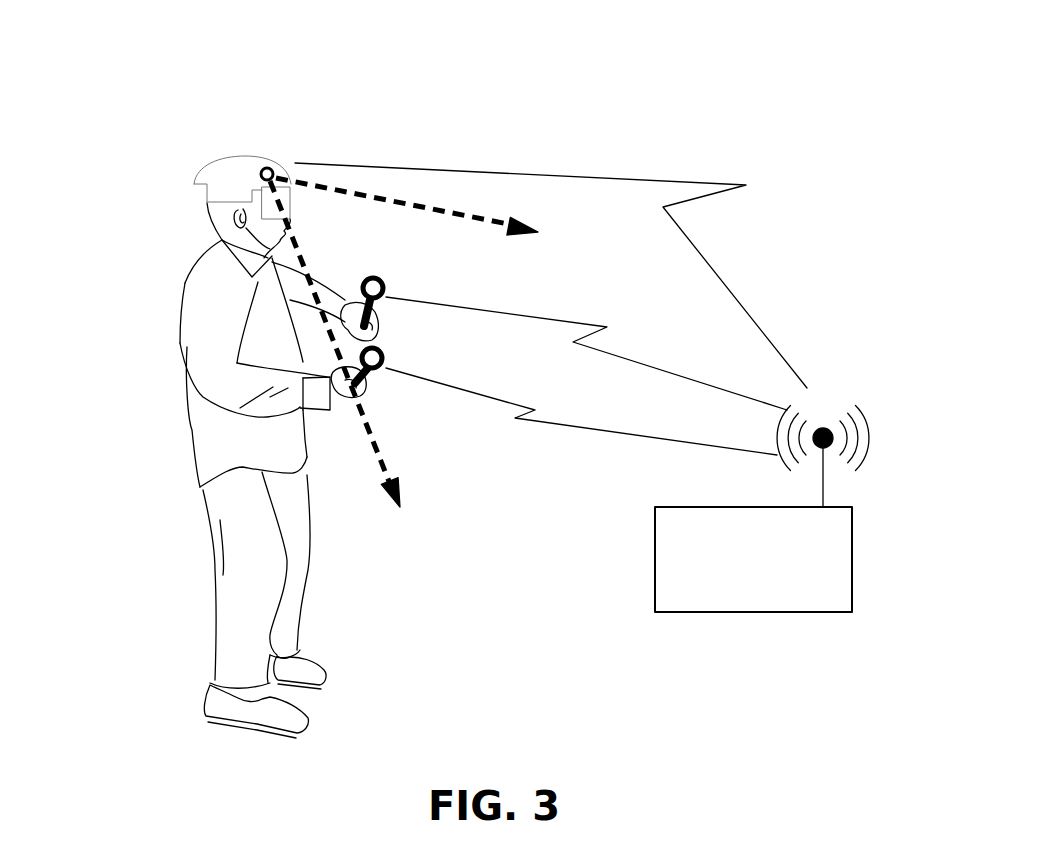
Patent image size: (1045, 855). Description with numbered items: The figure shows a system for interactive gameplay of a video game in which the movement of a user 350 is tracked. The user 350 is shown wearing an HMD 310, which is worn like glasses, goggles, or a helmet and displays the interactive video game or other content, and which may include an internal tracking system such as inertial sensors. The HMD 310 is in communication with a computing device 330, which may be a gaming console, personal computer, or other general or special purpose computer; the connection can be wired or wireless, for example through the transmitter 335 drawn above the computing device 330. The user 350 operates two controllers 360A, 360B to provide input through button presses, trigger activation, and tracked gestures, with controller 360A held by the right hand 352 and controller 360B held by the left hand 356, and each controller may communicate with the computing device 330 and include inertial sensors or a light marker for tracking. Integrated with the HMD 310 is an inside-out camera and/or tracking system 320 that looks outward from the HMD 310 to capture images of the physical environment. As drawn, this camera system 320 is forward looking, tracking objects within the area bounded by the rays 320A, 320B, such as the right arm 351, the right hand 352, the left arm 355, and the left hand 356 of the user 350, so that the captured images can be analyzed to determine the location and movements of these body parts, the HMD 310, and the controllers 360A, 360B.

The HMD 310 is at (208, 160).
The inside-out camera and/or tracking system 320 is at (267, 167).
The ray 320A is at (380, 453).
The ray 320B is at (502, 226).
The computing device 330 is at (807, 612).
The transmitter 335 is at (880, 382).
The user 350 is at (130, 524).
The right arm 351 is at (220, 343).
The right hand 352 is at (346, 400).
The left arm 355 is at (342, 322).
The left hand 356 is at (358, 308).
The controller 360A is at (382, 346).
The controller 360B is at (373, 276).